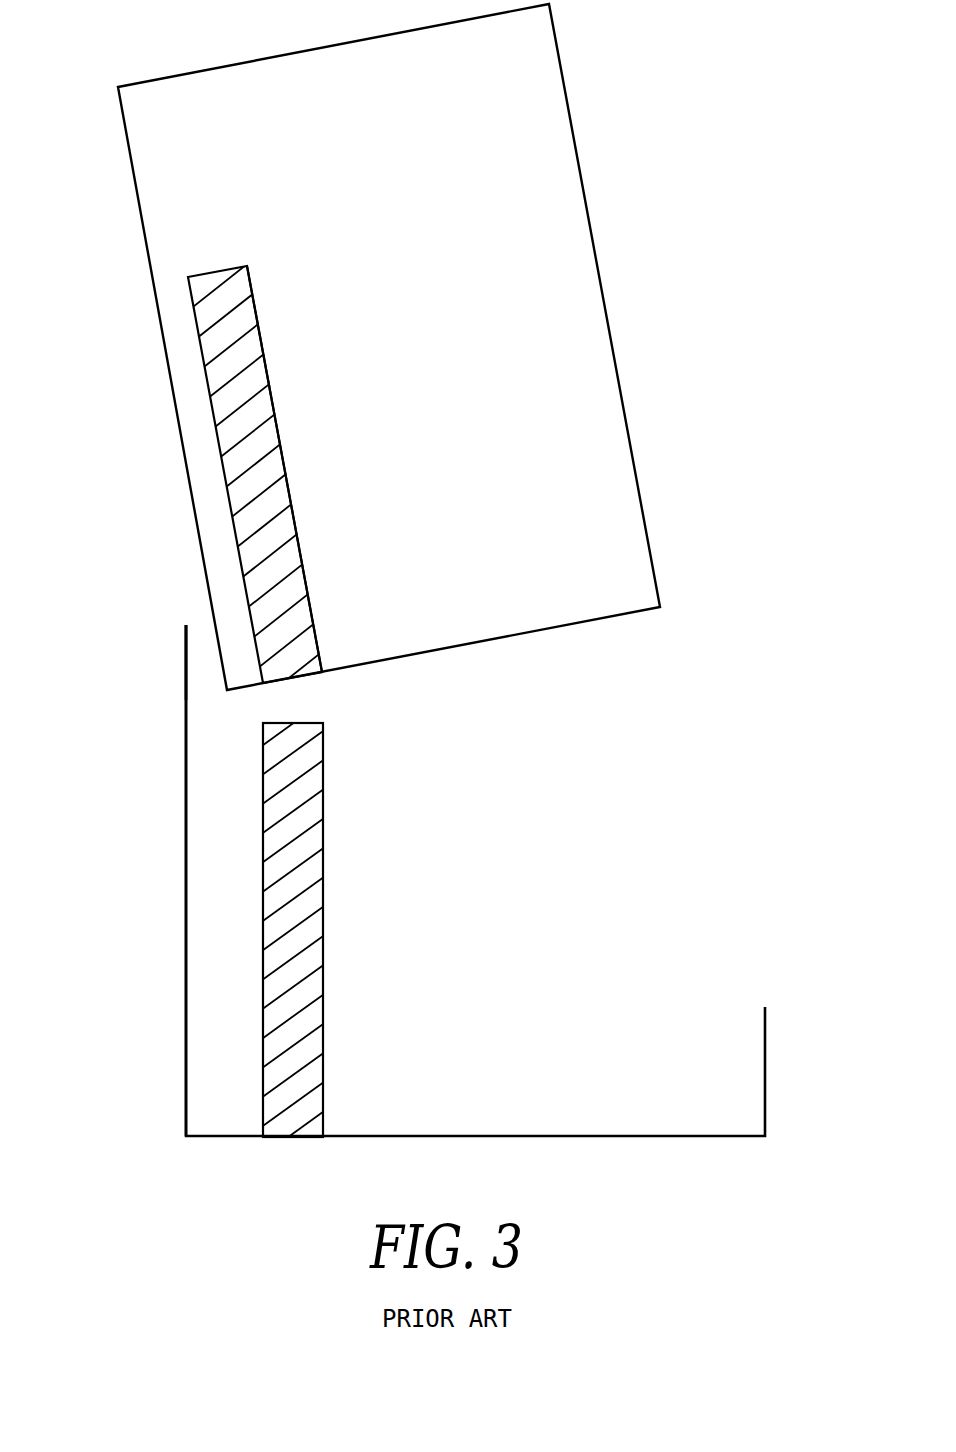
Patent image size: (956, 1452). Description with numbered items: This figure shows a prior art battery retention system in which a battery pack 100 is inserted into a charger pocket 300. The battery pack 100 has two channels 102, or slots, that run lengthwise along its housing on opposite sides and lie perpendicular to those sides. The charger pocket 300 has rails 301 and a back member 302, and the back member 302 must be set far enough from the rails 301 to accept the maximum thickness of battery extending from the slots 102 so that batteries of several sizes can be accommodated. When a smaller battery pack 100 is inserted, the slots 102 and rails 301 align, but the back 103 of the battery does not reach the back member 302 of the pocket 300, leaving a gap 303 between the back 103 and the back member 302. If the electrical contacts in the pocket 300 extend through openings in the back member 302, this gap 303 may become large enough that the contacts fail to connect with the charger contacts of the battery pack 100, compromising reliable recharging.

The battery pack 100 is at (428, 334).
The channel 102 is at (253, 295).
The back of the battery 103 is at (218, 443).
The charger pocket 300 is at (445, 965).
The rail 301 is at (325, 895).
The back member 302 is at (186, 880).
The gap 303 is at (202, 658).